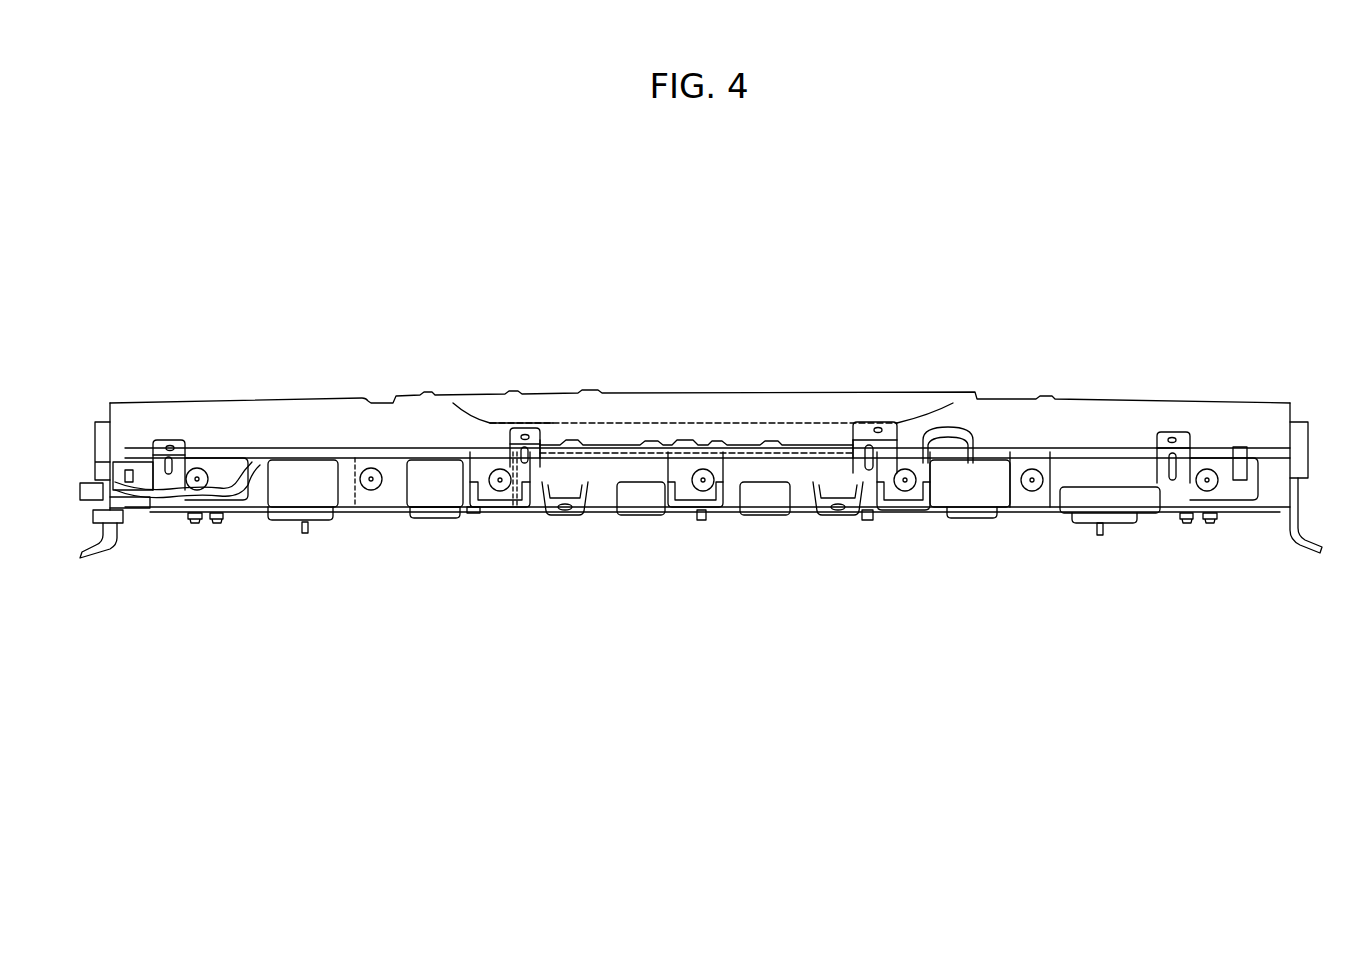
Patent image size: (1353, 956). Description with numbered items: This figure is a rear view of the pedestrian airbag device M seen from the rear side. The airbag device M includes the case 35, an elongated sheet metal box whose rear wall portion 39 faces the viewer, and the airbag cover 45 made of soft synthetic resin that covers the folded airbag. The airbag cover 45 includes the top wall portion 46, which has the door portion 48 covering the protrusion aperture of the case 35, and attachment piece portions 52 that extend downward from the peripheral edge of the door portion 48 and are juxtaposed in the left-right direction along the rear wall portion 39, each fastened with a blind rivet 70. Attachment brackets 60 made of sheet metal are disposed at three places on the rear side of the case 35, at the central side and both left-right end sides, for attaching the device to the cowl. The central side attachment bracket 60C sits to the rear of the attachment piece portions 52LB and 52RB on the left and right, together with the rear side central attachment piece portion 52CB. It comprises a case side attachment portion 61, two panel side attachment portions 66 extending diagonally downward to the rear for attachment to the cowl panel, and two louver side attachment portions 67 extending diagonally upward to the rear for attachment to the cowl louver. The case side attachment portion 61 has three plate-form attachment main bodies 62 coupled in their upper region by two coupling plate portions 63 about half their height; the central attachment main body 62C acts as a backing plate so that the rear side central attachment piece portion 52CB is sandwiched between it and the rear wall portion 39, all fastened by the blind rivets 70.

The airbag device M is at (1258, 340).
The airbag cover 45 is at (1109, 392).
The top wall portion 46 is at (1002, 417).
The door portion 48 is at (707, 403).
The coupling plate portion 63 is at (613, 468).
The central side attachment bracket 60C is at (793, 452).
The attachment bracket 60 is at (177, 428).
The louver side attachment portion 67 is at (533, 427).
The blind rivet 70 is at (374, 468).
The attachment main body 62 is at (487, 495).
The central side attachment main body 62C is at (717, 495).
The panel side attachment portion 66 is at (560, 518).
The case side attachment portion 61 is at (600, 492).
The rear wall portion 39 is at (443, 487).
The case 35 is at (355, 520).
The attachment piece portion 52 is at (714, 567).
The attachment piece portion 52LB is at (380, 518).
The rear side central attachment piece portion 52CB is at (738, 512).
The attachment piece portion 52RB is at (983, 497).